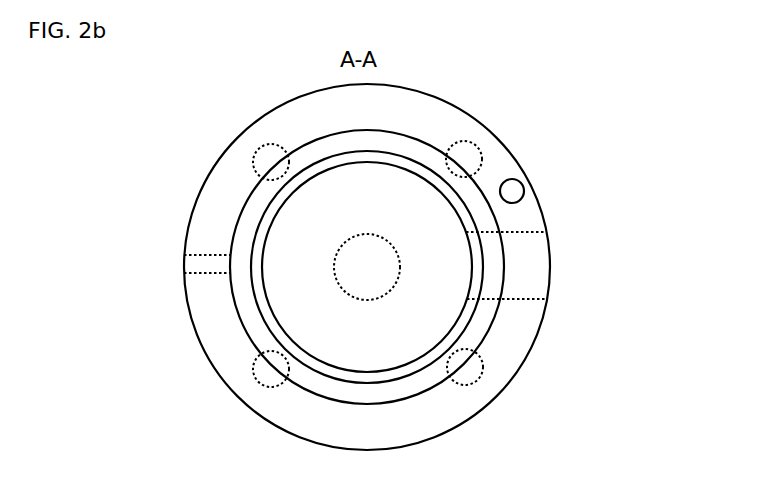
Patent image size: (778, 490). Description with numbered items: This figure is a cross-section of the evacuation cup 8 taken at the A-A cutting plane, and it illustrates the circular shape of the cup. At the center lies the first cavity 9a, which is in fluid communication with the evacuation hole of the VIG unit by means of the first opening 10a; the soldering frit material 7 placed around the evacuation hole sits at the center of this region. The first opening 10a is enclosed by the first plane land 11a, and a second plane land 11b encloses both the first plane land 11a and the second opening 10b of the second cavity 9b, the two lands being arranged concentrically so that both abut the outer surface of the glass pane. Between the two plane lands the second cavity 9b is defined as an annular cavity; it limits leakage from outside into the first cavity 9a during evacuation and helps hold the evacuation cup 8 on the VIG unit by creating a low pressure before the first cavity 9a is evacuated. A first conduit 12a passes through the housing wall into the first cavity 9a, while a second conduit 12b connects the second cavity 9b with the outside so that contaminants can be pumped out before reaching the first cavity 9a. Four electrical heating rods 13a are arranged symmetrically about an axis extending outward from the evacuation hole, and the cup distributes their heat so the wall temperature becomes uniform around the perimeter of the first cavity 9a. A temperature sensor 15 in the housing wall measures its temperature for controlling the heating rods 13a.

The soldering frit material 7 is at (375, 279).
The evacuation cup 8 is at (547, 113).
The first cavity 9a is at (367, 267).
The first opening 10a is at (405, 222).
The second cavity 9b is at (293, 267).
The second opening 10b is at (260, 340).
The first plane land 11a is at (270, 210).
The second plane land 11b is at (217, 228).
The first conduit 12a is at (548, 232).
The second conduit 12b is at (183, 255).
The electrical heating rods 13a is at (268, 160).
The temperature sensor 15 is at (512, 190).